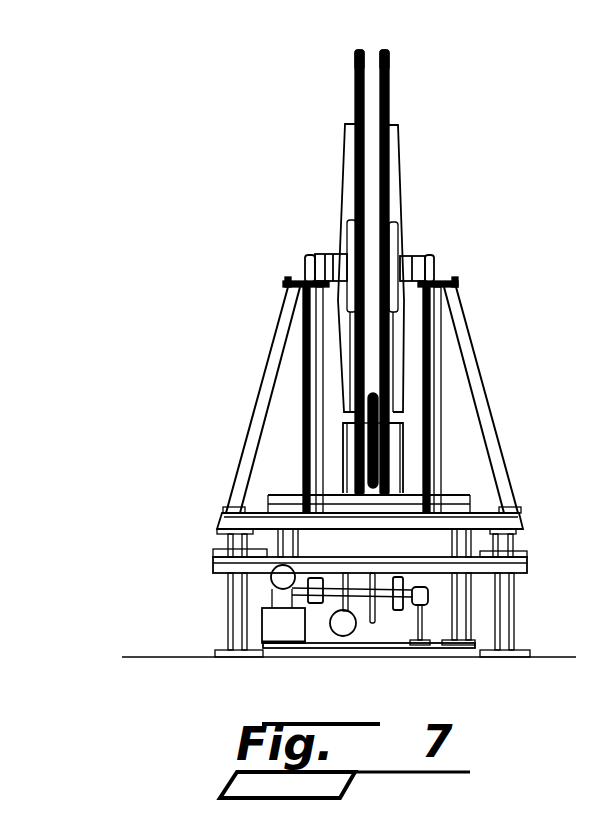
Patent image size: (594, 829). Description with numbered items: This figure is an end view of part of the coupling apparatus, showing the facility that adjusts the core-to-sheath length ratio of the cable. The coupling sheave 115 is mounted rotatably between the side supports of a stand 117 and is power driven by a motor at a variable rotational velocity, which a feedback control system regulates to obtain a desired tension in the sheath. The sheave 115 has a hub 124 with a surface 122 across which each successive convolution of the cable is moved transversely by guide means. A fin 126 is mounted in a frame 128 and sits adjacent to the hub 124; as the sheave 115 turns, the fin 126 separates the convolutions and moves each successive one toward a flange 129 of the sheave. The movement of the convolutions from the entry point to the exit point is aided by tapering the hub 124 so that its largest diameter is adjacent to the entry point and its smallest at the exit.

The coupling sheave 115 is at (396, 118).
The stand 117 is at (210, 556).
The surface of hub 122 is at (369, 60).
The hub 124 is at (463, 256).
The fin 126 is at (390, 403).
The frame 128 is at (440, 360).
The flange 129 is at (352, 170).